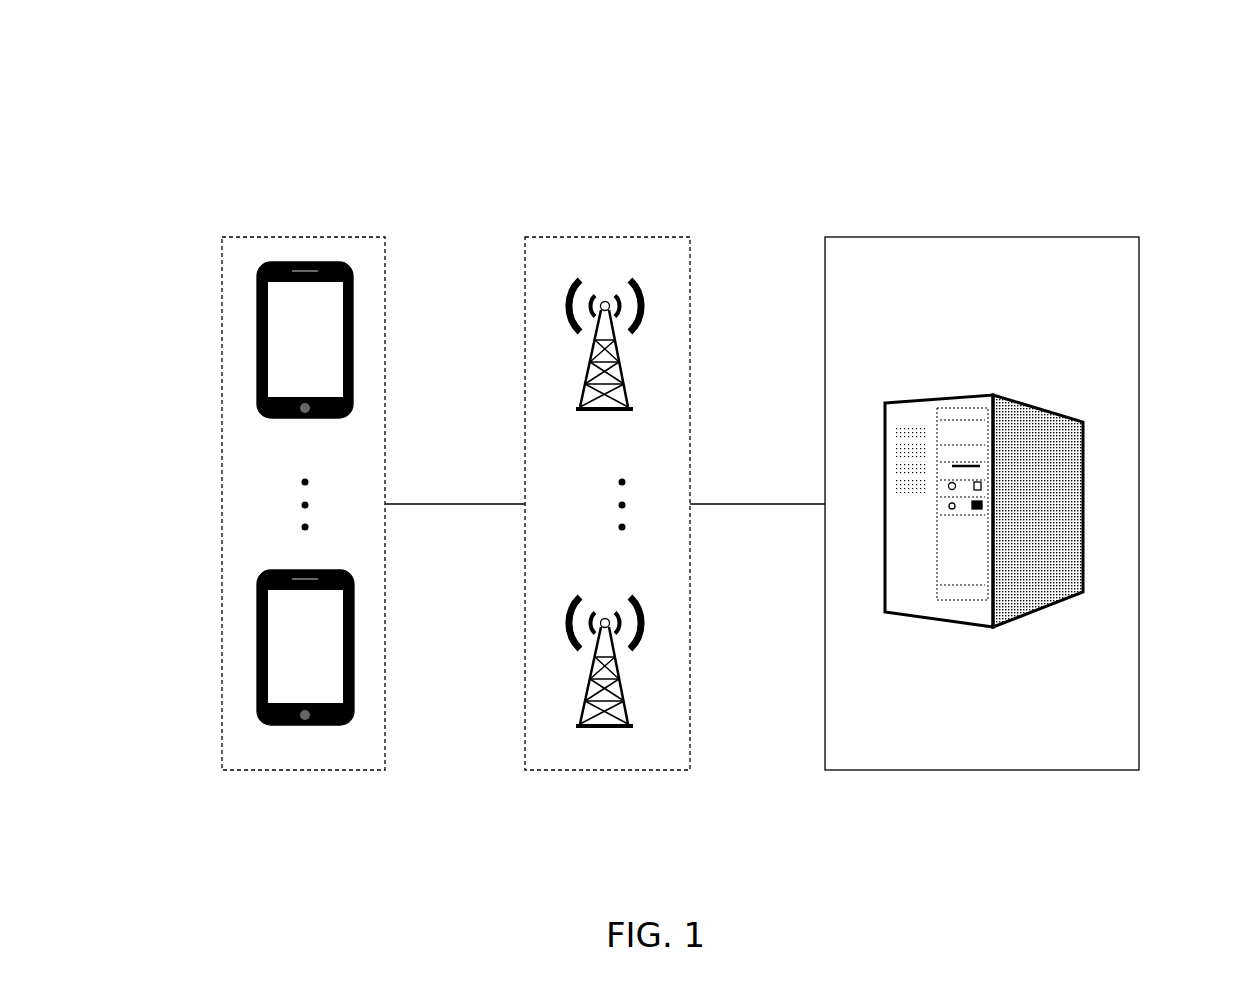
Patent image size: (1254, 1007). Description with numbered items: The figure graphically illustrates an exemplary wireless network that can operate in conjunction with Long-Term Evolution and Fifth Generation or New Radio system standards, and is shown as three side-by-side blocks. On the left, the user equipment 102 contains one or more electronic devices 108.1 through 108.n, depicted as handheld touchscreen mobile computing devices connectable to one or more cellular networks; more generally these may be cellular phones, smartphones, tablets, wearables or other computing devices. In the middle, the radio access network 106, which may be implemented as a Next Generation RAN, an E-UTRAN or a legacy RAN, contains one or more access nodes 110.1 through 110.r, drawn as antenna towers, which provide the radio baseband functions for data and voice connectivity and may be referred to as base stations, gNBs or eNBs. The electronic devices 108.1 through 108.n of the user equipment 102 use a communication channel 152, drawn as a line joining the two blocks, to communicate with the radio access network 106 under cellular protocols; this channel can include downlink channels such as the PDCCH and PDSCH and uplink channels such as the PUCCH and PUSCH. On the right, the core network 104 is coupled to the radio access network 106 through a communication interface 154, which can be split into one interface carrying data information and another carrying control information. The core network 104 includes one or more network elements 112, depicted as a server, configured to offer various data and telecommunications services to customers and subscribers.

The user equipment 102 is at (387, 237).
The core network 104 is at (1141, 237).
The radio access network 106 is at (692, 237).
The electronic device 108.1 is at (243, 322).
The electronic device 108.n is at (243, 639).
The access node 110.1 is at (652, 352).
The access node 110.r is at (652, 670).
The network element 112 is at (1102, 478).
The communication channel 152 is at (460, 504).
The communication interface 154 is at (747, 504).